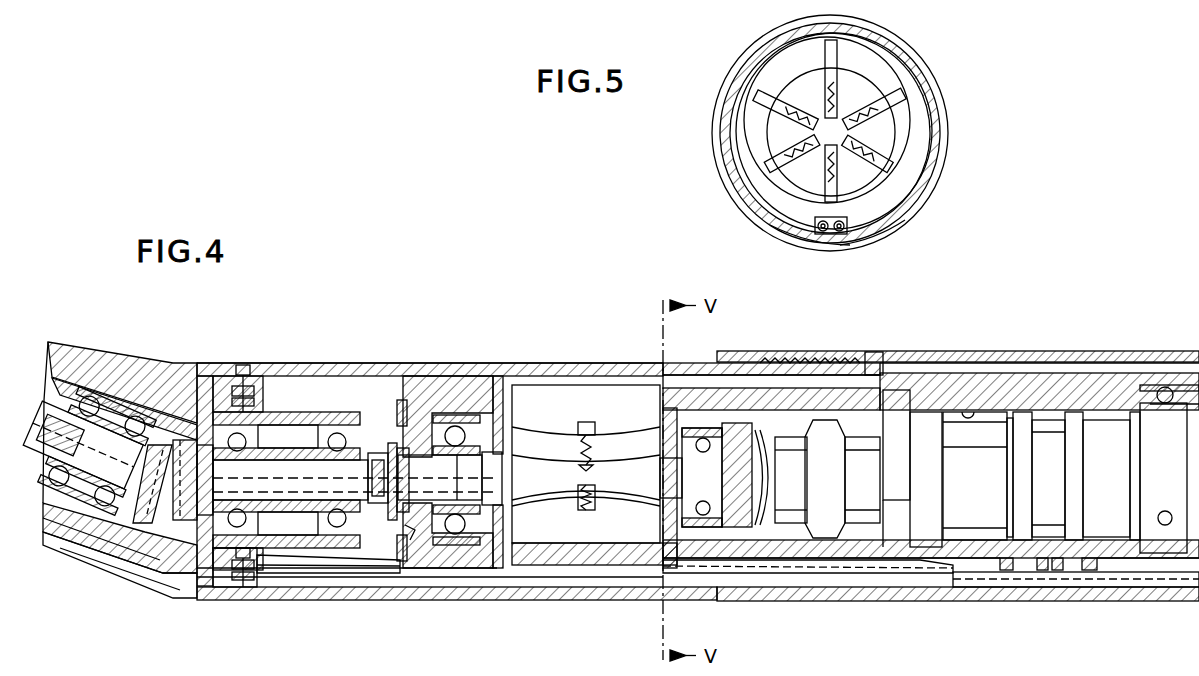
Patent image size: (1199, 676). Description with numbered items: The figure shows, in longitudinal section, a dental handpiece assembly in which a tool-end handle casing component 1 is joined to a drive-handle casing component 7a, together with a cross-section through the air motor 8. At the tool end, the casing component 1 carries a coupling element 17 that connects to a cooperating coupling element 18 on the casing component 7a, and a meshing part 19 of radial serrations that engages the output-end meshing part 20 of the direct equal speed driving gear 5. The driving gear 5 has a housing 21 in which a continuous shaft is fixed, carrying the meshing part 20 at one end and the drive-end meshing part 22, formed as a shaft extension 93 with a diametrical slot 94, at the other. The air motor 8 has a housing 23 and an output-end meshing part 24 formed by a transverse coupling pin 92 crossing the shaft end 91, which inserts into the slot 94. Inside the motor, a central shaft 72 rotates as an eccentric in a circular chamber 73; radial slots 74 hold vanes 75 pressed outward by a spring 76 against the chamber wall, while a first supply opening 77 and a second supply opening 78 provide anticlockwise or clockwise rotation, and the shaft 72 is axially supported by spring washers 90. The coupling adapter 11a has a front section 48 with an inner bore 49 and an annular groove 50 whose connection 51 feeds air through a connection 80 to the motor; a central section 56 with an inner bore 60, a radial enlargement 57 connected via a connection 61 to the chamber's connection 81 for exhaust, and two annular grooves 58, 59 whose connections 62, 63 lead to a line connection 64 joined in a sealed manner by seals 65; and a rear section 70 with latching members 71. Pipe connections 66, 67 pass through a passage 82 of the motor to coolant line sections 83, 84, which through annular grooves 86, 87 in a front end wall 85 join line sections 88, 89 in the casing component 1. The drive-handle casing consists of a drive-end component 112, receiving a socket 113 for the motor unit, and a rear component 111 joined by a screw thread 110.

In FIG. 4, the tool-end handle casing component 1 is at (80, 343).
In FIG. 4, the direct equal speed driving gear 5 is at (302, 452).
In FIG. 4, the drive-handle casing component 7a is at (495, 593).
In FIG. 5, the drive-handle casing component 7a is at (722, 70).
In FIG. 4, the air motor 8 is at (587, 420).
In FIG. 5, the air motor 8 is at (738, 115).
In FIG. 4, the coupling adapter 11a is at (928, 408).
In FIG. 4, the coupling element 17 is at (205, 385).
In FIG. 4, the coupling element 18 is at (217, 376).
In FIG. 4, the meshing part 19 is at (160, 525).
In FIG. 4, the output-end meshing part 20 is at (185, 522).
In FIG. 4, the housing 21 is at (290, 435).
In FIG. 4, the drive-end meshing part 22 is at (375, 535).
In FIG. 4, the housing 23 is at (450, 395).
In FIG. 4, the output-end meshing part 24 is at (432, 522).
In FIG. 4, the front section 48 is at (852, 440).
In FIG. 4, the inner bore 49 is at (884, 440).
In FIG. 4, the annular groove 50 is at (826, 422).
In FIG. 4, the connection 51 is at (812, 545).
In FIG. 4, the central section 56 is at (1022, 432).
In FIG. 4, the radial enlargement 57 is at (958, 432).
In FIG. 4, the annular groove 58 is at (1042, 422).
In FIG. 4, the annular groove 59 is at (1073, 432).
In FIG. 4, the inner bore 60 is at (970, 413).
In FIG. 4, the connection 61 is at (800, 397).
In FIG. 4, the connection 62 is at (1008, 571).
In FIG. 4, the connection 63 is at (1090, 571).
In FIG. 4, the line connection 64 is at (978, 588).
In FIG. 4, the seals 65 is at (1058, 571).
In FIG. 4, the pipe connection 66 is at (938, 575).
In FIG. 5, the pipe connection 66 is at (888, 230).
In FIG. 5, the pipe connection 67 is at (805, 234).
In FIG. 4, the rear section 70 is at (1145, 396).
In FIG. 4, the latching members 71 is at (1167, 388).
In FIG. 4, the central shaft 72 is at (517, 492).
In FIG. 5, the central shaft 72 is at (880, 80).
In FIG. 5, the circular chamber 73 is at (860, 55).
In FIG. 5, the radial slots 74 is at (905, 90).
In FIG. 4, the vane 75 is at (572, 527).
In FIG. 5, the vane 75 is at (900, 115).
In FIG. 4, the spring 76 is at (590, 512).
In FIG. 5, the spring 76 is at (895, 130).
In FIG. 5, the first supply opening 77 is at (920, 150).
In FIG. 5, the second supply opening 78 is at (775, 175).
In FIG. 4, the connection 80 is at (706, 530).
In FIG. 4, the connection 81 is at (705, 386).
In FIG. 5, the passage 82 is at (850, 230).
In FIG. 4, the coolant line section 83 is at (268, 592).
In FIG. 4, the coolant line section 84 is at (300, 574).
In FIG. 4, the front end wall 85 is at (243, 580).
In FIG. 4, the annular groove 86 is at (247, 383).
In FIG. 4, the annular groove 87 is at (254, 400).
In FIG. 4, the line section 88 is at (148, 575).
In FIG. 4, the line section 89 is at (120, 548).
In FIG. 4, the spring washers 90 is at (412, 528).
In FIG. 4, the shaft end 91 is at (420, 458).
In FIG. 4, the transverse coupling pin 92 is at (402, 448).
In FIG. 4, the shaft extension 93 is at (376, 453).
In FIG. 4, the diametrical slot 94 is at (392, 443).
In FIG. 4, the screw thread 110 is at (780, 364).
In FIG. 4, the rear component 111 is at (1093, 372).
In FIG. 4, the drive-end component 112 is at (480, 365).
In FIG. 4, the socket 113 is at (503, 386).